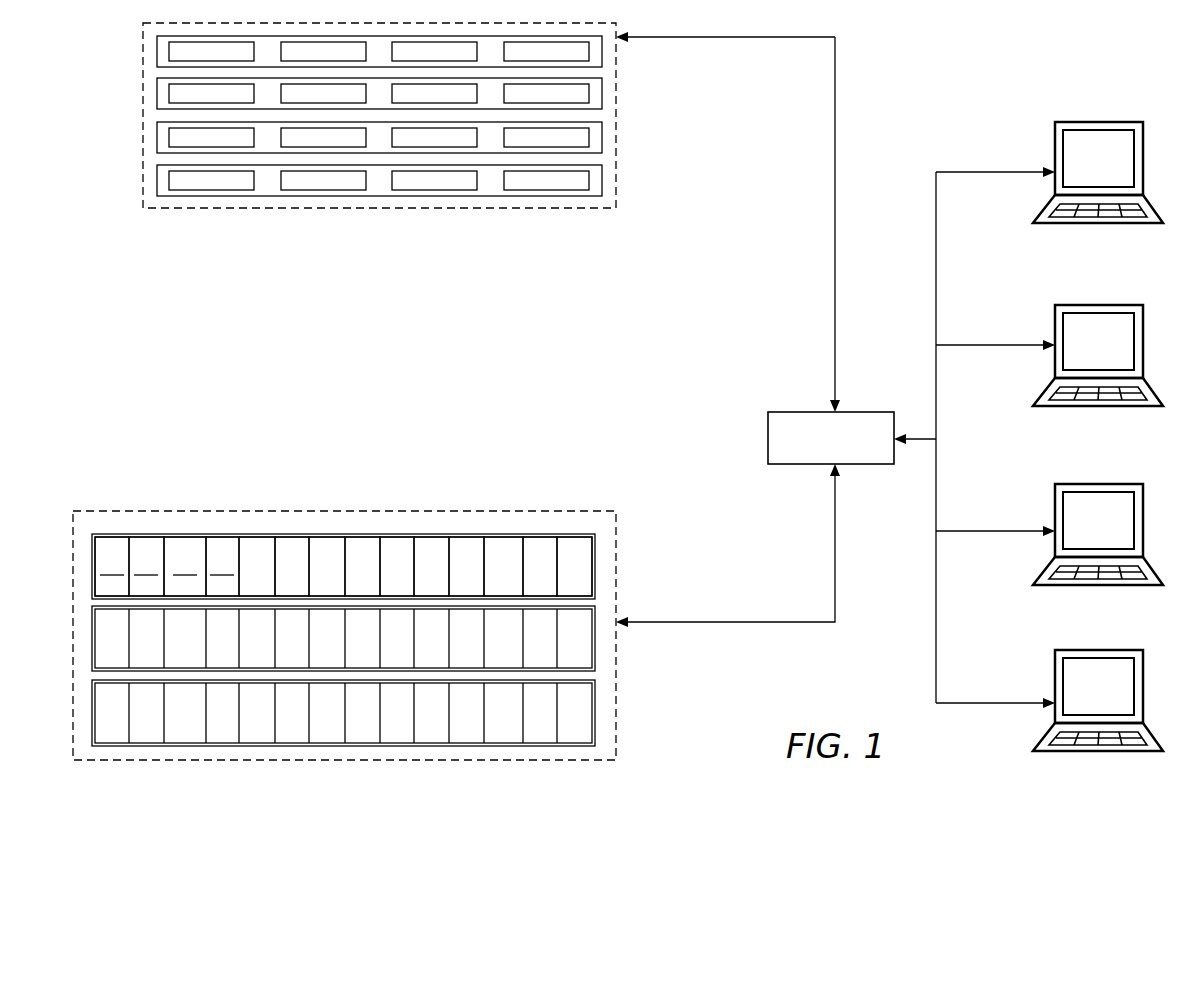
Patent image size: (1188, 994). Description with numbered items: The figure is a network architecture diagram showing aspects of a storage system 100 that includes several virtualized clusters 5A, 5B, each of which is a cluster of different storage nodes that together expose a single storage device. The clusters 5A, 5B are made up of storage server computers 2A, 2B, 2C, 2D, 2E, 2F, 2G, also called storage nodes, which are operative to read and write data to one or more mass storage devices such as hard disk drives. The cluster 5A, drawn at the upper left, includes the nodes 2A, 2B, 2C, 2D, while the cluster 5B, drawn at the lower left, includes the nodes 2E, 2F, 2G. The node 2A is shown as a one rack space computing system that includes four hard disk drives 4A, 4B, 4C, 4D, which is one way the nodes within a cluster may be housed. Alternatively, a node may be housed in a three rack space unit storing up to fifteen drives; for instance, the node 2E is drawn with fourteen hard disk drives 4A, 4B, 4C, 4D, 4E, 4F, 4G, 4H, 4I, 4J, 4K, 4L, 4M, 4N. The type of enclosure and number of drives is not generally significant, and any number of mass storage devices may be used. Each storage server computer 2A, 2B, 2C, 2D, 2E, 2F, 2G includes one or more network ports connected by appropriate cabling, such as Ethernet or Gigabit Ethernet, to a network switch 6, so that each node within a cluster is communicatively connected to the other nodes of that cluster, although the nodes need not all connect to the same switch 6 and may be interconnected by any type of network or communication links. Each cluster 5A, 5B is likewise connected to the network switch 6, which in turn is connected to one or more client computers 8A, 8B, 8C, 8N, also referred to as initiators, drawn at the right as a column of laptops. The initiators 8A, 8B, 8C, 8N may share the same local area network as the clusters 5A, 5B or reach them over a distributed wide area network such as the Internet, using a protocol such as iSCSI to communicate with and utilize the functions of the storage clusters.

The storage system 100 is at (937, 42).
The virtualized cluster 5A is at (411, 105).
The virtualized cluster 5B is at (373, 625).
The storage server computer 2A is at (418, 56).
The storage server computer 2B is at (602, 93).
The storage server computer 2C is at (602, 137).
The storage server computer 2D is at (602, 180).
The storage server computer 2E is at (381, 566).
The storage server computer 2F is at (595, 651).
The storage server computer 2G is at (595, 713).
The hard disk drive 4A is at (200, 61).
The hard disk drive 4B is at (311, 61).
The hard disk drive 4C is at (423, 61).
The hard disk drive 4D is at (534, 61).
The hard disk drive 4E is at (245, 575).
The hard disk drive 4F is at (280, 575).
The hard disk drive 4G is at (315, 575).
The hard disk drive 4H is at (350, 575).
The hard disk drive 4I is at (388, 575).
The hard disk drive 4J is at (420, 575).
The hard disk drive 4K is at (454, 575).
The hard disk drive 4L is at (492, 575).
The hard disk drive 4M is at (527, 575).
The hard disk drive 4N is at (562, 575).
The network switch 6 is at (829, 428).
The client computer 8A is at (1098, 163).
The client computer 8B is at (1098, 346).
The client computer 8C is at (1098, 525).
The client computer 8N is at (1098, 691).